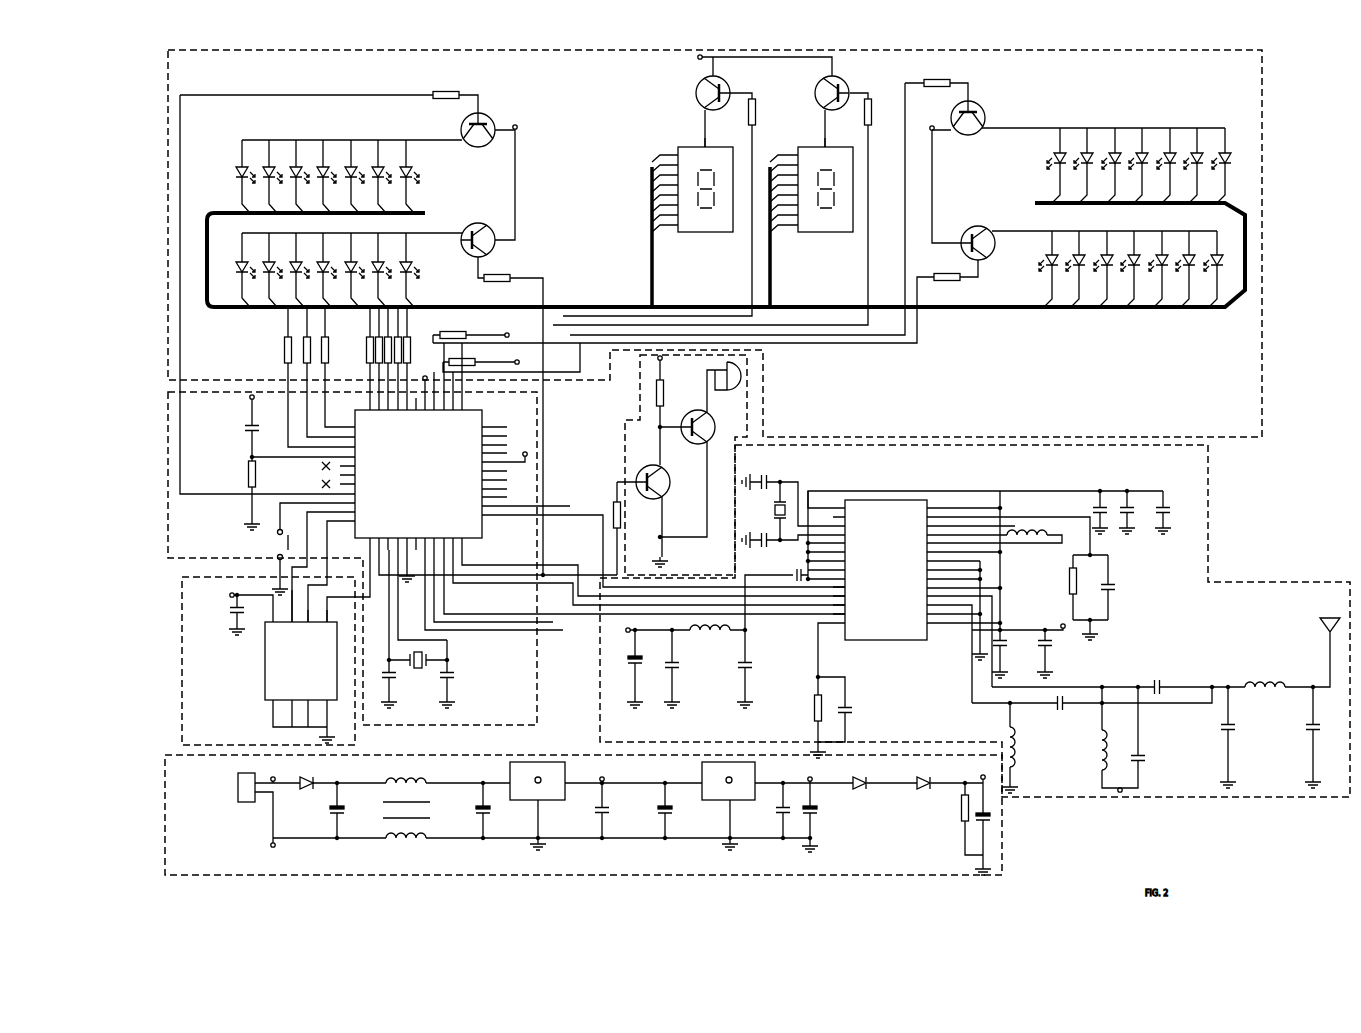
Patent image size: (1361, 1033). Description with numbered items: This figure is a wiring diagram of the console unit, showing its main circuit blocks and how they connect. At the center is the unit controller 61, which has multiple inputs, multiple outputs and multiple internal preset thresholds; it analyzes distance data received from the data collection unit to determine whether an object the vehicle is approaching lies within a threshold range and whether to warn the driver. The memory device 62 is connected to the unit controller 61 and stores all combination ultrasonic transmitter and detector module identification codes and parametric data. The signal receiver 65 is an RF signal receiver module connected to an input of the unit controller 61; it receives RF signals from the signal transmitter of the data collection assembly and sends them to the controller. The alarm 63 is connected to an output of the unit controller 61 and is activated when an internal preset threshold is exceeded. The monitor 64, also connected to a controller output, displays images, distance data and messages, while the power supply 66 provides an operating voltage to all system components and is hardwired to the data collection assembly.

The unit controller 61 is at (170, 490).
The memory device 62 is at (182, 672).
The alarm 63 is at (625, 440).
The monitor 64 is at (1264, 252).
The signal receiver 65 is at (1210, 522).
The power supply 66 is at (1004, 842).